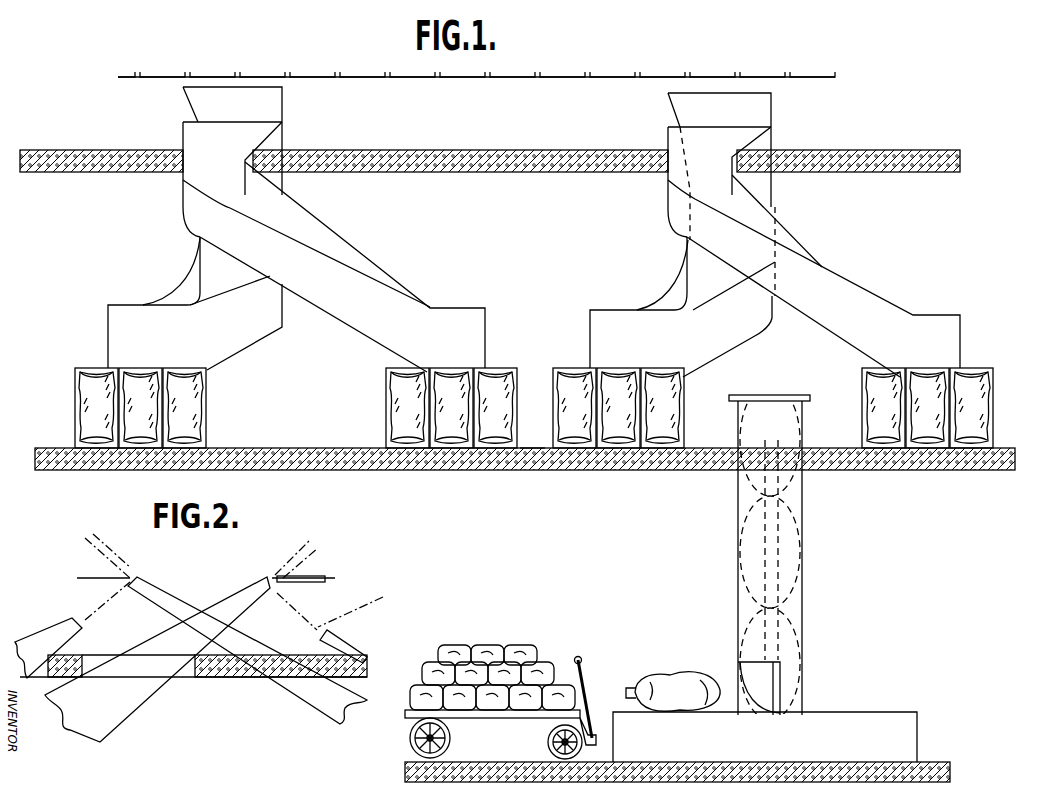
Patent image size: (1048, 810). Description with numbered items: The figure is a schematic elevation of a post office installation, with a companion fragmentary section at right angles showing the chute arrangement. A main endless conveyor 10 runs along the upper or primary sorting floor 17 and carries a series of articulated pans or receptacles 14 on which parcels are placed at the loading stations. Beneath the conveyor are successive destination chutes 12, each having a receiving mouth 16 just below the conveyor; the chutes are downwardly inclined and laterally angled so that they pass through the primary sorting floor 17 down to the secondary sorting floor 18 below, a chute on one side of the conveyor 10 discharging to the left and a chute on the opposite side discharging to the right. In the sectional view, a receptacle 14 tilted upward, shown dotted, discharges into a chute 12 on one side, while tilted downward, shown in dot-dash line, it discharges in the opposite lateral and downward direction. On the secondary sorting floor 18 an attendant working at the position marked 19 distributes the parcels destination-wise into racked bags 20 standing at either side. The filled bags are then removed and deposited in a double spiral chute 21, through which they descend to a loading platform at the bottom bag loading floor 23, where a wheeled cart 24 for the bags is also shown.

In FIG. 1, the main endless conveyor 10 is at (624, 76).
In FIG. 1, the destination chute 12 is at (167, 288).
In FIG. 2, the destination chute 12 is at (30, 640).
In FIG. 1, the articulated pan or receptacle 14 is at (318, 78).
In FIG. 2, the articulated pan or receptacle 14 is at (100, 548).
In FIG. 1, the receiving mouth 16 is at (285, 105).
In FIG. 2, the receiving mouth 16 is at (255, 578).
In FIG. 1, the upper or primary sorting floor 17 is at (407, 153).
In FIG. 2, the upper or primary sorting floor 17 is at (300, 657).
In FIG. 1, the secondary sorting floor 18 is at (253, 453).
In FIG. 1, the attendant position 19 is at (530, 450).
In FIG. 1, the racked bag 20 is at (194, 417).
In FIG. 1, the double spiral chute 21 is at (800, 540).
In FIG. 1, the bottom bag loading floor 23 is at (935, 765).
In FIG. 1, the cart 24 is at (622, 710).